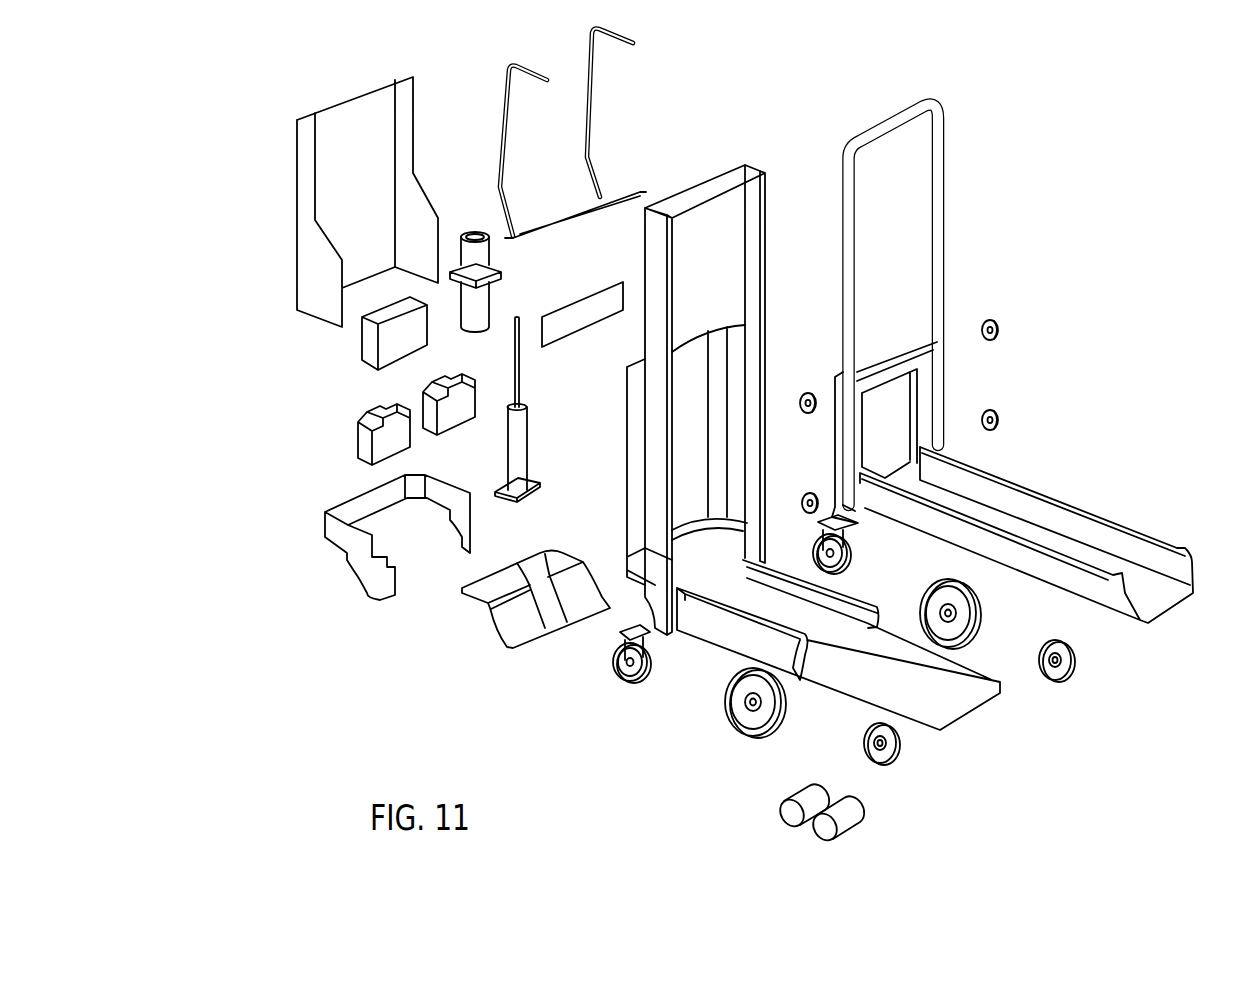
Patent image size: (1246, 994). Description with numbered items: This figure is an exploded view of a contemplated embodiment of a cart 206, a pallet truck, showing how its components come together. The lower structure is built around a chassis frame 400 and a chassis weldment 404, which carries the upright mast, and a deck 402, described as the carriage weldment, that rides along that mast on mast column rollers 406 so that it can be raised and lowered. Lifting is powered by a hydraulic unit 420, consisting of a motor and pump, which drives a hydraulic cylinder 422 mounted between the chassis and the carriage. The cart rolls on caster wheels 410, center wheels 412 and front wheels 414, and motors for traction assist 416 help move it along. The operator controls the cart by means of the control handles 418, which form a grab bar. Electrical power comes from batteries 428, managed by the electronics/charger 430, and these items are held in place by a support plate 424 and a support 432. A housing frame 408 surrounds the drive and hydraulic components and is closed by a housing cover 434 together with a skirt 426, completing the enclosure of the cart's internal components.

The cart 206 is at (268, 478).
The chassis frame 400 is at (776, 448).
The deck 402 is at (1105, 500).
The chassis weldment 404 is at (767, 255).
The mast column rollers 406 is at (808, 392).
The housing frame 408 is at (624, 455).
The caster wheels 410 is at (612, 680).
The center wheels 412 is at (746, 740).
The front wheels 414 is at (900, 758).
The motors for traction assist 416 is at (815, 838).
The control handles 418 is at (604, 113).
The hydraulic unit 420 is at (470, 228).
The hydraulic cylinder 422 is at (538, 423).
The support plate 424 is at (562, 545).
The skirt 426 is at (324, 530).
The batteries 428 is at (426, 400).
The electronics/charger 430 is at (360, 350).
The support 432 is at (584, 292).
The housing cover 434 is at (355, 108).